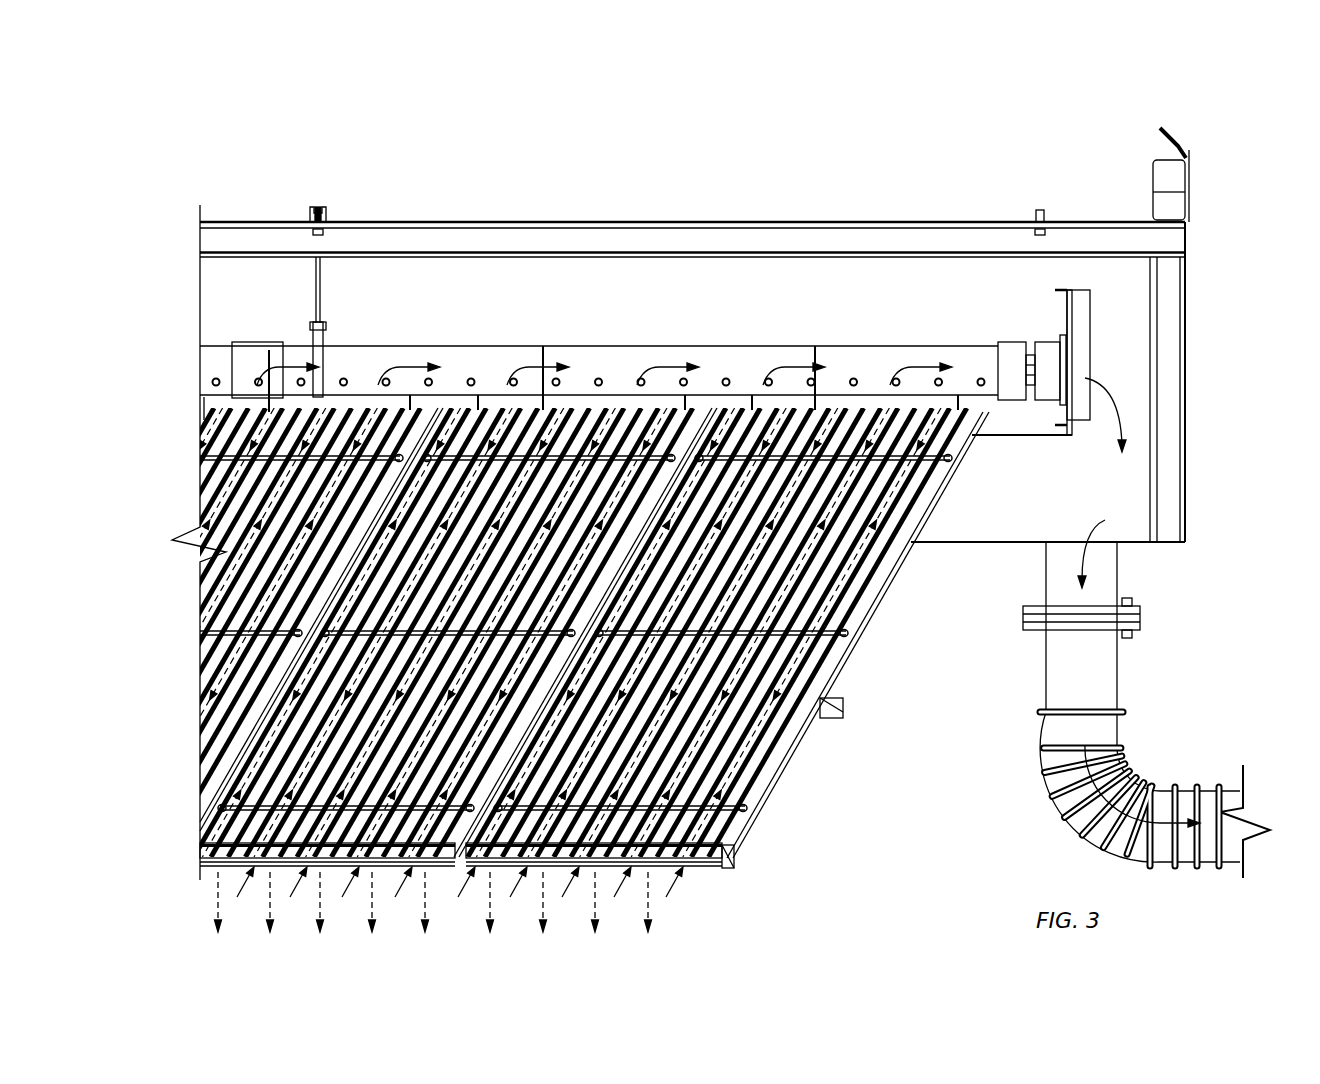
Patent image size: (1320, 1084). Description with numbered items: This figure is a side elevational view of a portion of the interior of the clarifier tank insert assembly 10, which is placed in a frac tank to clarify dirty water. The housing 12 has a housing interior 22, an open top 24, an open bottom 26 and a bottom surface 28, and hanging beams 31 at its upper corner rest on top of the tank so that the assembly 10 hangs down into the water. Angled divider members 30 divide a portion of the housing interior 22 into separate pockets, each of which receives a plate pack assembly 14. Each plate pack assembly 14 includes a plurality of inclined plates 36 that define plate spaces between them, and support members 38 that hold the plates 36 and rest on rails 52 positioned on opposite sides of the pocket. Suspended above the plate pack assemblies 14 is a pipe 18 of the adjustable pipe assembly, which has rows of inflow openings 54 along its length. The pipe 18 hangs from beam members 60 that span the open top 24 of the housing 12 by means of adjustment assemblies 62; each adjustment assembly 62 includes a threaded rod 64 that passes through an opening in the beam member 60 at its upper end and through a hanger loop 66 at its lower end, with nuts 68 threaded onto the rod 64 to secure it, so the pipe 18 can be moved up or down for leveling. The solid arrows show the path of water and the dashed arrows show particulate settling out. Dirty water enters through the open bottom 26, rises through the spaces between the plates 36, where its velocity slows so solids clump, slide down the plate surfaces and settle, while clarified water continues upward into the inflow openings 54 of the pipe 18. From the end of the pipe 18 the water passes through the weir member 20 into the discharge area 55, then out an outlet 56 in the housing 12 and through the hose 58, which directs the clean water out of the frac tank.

The clarifier tank insert assembly 10 is at (971, 134).
The housing 12 is at (1168, 333).
The plate pack assembly 14 is at (800, 730).
The pipe 18 is at (877, 365).
The weir member 20 is at (1058, 290).
The housing interior 22 is at (452, 308).
The open top 24 is at (622, 213).
The open bottom 26 is at (450, 878).
The bottom surface 28 is at (700, 870).
The angled divider member 30 is at (704, 425).
The hanging beam 31 is at (1178, 170).
The plate 36 is at (865, 572).
The support member 38 is at (727, 853).
The rail 52 is at (720, 870).
The inflow opening 54 is at (471, 380).
The discharge area 55 is at (1102, 487).
The outlet 56 is at (1105, 575).
The hose 58 is at (1155, 775).
The beam member 60 is at (326, 212).
The adjustment assembly 62 is at (356, 268).
The threaded rod 64 is at (314, 288).
The hanger loop 66 is at (323, 332).
The nut 68 is at (317, 210).